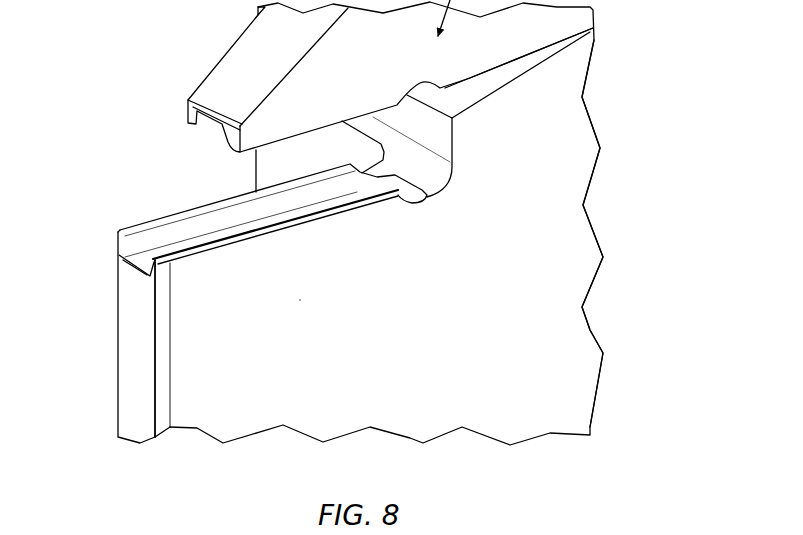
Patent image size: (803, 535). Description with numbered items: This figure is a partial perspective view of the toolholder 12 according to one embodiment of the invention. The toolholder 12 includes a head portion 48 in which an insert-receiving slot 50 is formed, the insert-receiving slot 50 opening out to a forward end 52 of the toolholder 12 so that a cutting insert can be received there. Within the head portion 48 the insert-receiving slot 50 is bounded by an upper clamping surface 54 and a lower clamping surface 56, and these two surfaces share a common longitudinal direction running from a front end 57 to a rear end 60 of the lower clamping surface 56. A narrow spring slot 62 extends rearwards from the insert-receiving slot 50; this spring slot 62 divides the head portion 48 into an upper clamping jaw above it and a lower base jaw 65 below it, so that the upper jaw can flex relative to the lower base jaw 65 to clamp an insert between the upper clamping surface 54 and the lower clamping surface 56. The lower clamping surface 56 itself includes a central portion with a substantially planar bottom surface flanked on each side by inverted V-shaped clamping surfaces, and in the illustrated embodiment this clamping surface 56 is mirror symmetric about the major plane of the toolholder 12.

The toolholder 12 is at (531, 403).
The head portion 48 is at (408, 332).
The insert-receiving slot 50 is at (197, 178).
The forward end 52 is at (112, 393).
The upper clamping surface 54 is at (212, 134).
The lower clamping surface 56 is at (118, 221).
The front end 57 is at (127, 271).
The rear end 60 is at (395, 161).
The spring slot 62 is at (551, 61).
The lower base jaw 65 is at (563, 248).